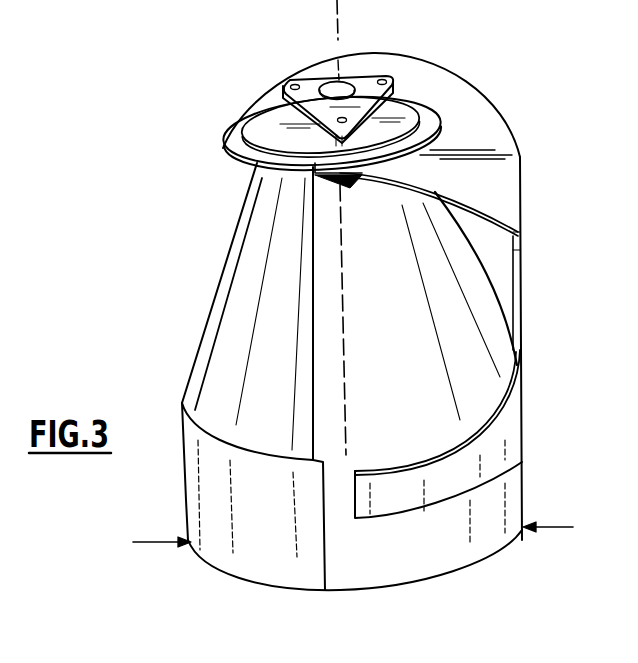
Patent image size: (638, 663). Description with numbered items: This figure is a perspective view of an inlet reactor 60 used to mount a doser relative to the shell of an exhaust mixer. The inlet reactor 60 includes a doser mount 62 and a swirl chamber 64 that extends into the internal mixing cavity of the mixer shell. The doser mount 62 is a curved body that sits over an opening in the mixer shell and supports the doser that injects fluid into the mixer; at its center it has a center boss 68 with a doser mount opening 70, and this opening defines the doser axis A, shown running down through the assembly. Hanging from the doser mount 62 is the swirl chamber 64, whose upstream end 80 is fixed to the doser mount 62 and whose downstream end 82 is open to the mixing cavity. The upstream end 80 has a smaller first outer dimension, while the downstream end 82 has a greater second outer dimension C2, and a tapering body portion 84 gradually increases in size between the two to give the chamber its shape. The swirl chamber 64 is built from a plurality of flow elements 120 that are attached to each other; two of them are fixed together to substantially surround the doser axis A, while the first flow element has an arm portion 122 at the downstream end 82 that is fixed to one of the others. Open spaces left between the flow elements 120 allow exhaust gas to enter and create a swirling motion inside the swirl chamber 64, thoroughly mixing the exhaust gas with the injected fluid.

The inlet reactor 60 is at (211, 73).
The doser mount 62 is at (465, 102).
The swirl chamber 64 is at (182, 398).
The center boss 68 is at (365, 95).
The doser mount opening 70 is at (327, 83).
The upstream end 80 is at (252, 178).
The downstream end 82 is at (437, 582).
The tapering body portion 84 is at (250, 300).
The flow elements 120 is at (503, 458).
The arm portion 122 is at (387, 500).
The doser axis A is at (345, 357).
The second outer dimension C2 is at (572, 527).